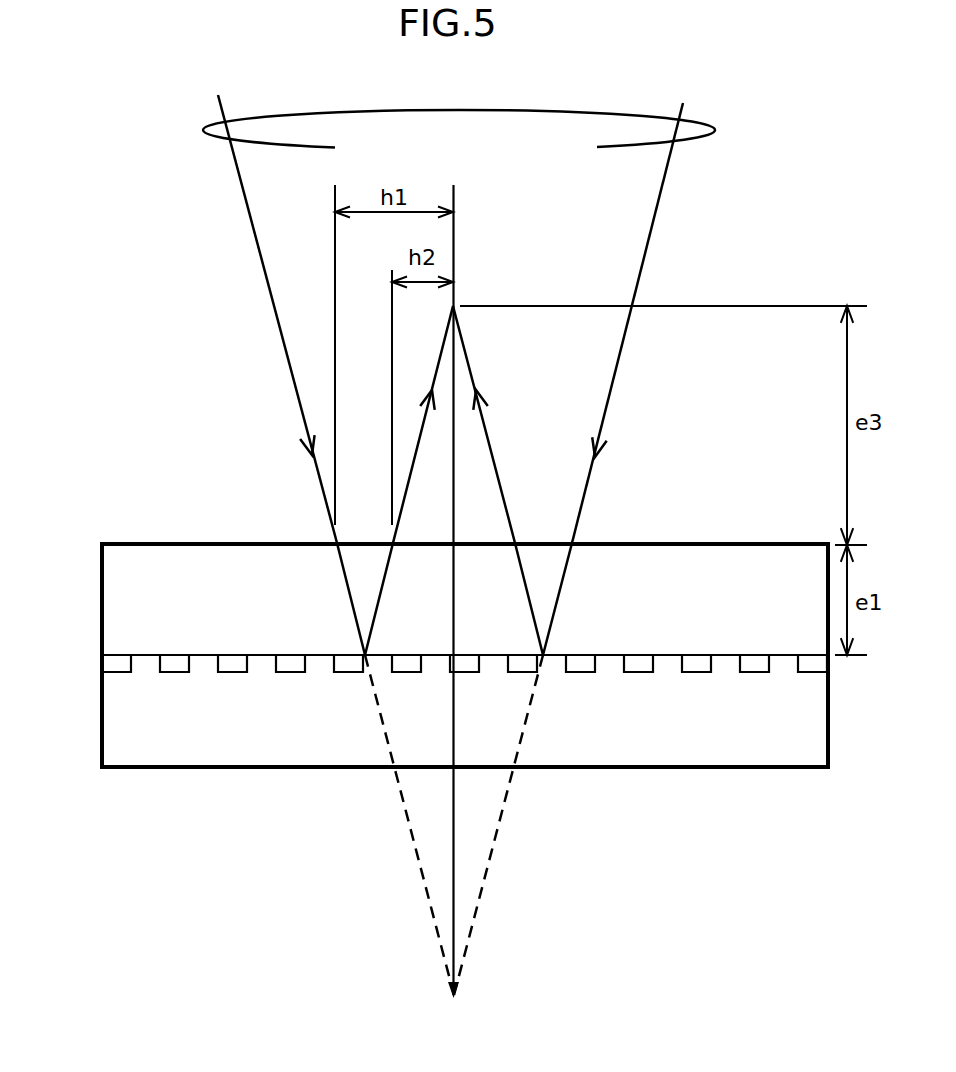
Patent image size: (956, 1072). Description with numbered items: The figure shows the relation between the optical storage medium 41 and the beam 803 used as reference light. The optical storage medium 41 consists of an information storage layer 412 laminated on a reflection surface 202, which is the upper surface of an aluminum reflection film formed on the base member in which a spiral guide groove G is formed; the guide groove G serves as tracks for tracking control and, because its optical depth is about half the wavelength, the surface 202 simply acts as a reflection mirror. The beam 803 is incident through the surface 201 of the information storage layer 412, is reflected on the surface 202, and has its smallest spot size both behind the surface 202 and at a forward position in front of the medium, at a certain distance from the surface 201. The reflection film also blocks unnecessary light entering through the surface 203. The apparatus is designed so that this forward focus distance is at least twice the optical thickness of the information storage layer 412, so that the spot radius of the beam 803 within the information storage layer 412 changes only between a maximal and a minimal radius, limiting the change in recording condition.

The beam 803 is at (225, 138).
The optical storage medium 41 is at (257, 543).
The information storage layer 412 is at (195, 558).
The surface 201 is at (117, 543).
The surface 202 is at (120, 653).
The surface 203 is at (120, 763).
The guide groove G is at (172, 673).